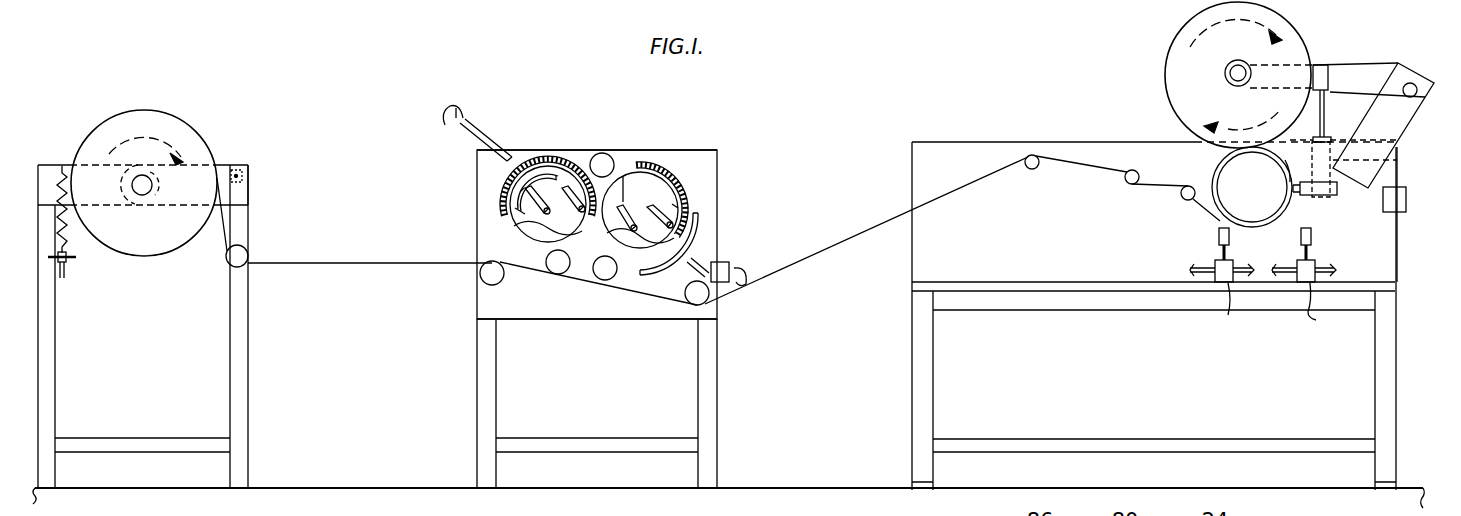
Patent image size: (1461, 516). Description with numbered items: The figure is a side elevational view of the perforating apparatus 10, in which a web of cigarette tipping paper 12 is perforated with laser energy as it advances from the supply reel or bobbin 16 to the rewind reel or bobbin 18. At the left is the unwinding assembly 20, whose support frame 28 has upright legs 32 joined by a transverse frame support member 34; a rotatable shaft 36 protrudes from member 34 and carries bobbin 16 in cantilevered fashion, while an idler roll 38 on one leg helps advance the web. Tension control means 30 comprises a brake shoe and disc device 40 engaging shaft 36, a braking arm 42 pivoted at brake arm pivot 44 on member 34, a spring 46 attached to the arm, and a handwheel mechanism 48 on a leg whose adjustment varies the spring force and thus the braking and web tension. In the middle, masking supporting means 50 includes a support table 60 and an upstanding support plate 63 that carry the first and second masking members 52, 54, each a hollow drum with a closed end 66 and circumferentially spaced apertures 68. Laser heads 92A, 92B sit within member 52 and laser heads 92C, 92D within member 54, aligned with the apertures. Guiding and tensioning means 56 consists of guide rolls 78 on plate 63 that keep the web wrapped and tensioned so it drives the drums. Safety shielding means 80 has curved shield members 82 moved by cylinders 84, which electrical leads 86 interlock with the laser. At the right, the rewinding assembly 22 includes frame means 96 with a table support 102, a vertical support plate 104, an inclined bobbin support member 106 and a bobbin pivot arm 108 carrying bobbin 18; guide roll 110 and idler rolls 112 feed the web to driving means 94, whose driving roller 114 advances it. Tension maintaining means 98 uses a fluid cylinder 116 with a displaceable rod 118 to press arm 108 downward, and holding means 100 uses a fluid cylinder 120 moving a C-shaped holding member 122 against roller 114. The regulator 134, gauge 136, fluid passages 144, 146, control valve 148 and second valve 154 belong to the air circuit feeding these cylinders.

The perforating apparatus 10 is at (988, 72).
The cigarette tipping paper 12 is at (377, 262).
The supply reel or bobbin 16 is at (175, 125).
The rewind reel or bobbin 18 is at (1180, 58).
The unwinding assembly 20 is at (276, 140).
The rewinding assembly 22 is at (1146, 98).
The support frame 28 is at (252, 348).
The tension control means 30 is at (145, 161).
The upright legs 32 is at (48, 387).
The transverse frame support member 34 is at (238, 196).
The rotatable shaft 36 is at (152, 185).
The idler roll 38 is at (246, 252).
The brake shoe and disc device 40 is at (127, 204).
The braking arm 42 is at (62, 166).
The brake arm pivot 44 is at (233, 168).
The spring 46 is at (70, 246).
The handwheel mechanism 48 is at (66, 275).
The masking supporting means 50 is at (728, 352).
The first masking member 52 is at (567, 152).
The second masking member 54 is at (690, 214).
The guiding and tensioning means 56 is at (415, 226).
The support table 60 is at (488, 354).
The upstanding support plate 63 is at (492, 306).
The closed end 66 is at (535, 226).
The apertures 68 is at (578, 150).
The guide rolls 78 is at (612, 158).
The safety shielding means 80 is at (498, 122).
The shield members 82 is at (530, 150).
The hydraulic or pneumatic cylinder 84 is at (692, 278).
The electrical leads 86 is at (462, 112).
The laser head 92A is at (524, 215).
The laser head 92B is at (520, 187).
The laser head 92C is at (640, 176).
The laser head 92D is at (680, 205).
The driving means 94 is at (1212, 168).
The frame means 96 is at (946, 262).
The tension maintaining means 98 is at (1332, 124).
The holding means 100 is at (1312, 199).
The table support 102 is at (1396, 342).
The vertical support plate 104 is at (965, 155).
The bobbin support member 106 is at (1410, 118).
The bobbin pivot arm 108 is at (1320, 64).
The guide roll 110 is at (1136, 170).
The idler rolls 112 is at (1032, 169).
The driving roller 114 is at (1240, 199).
The fluid cylinder 116 is at (1328, 139).
The vertical displaceable rod 118 is at (1322, 84).
The single acting fluid cylinder 120 is at (1338, 194).
The holding member 122 is at (1295, 165).
The relieving type air line regulator 134 is at (1390, 212).
The gauge 136 is at (1410, 170).
The fluid passage 144 is at (1348, 268).
The fluid passage 146 is at (1205, 262).
The three-way manual control valve 148 is at (1331, 309).
The second three-way manual valve 154 is at (1226, 310).